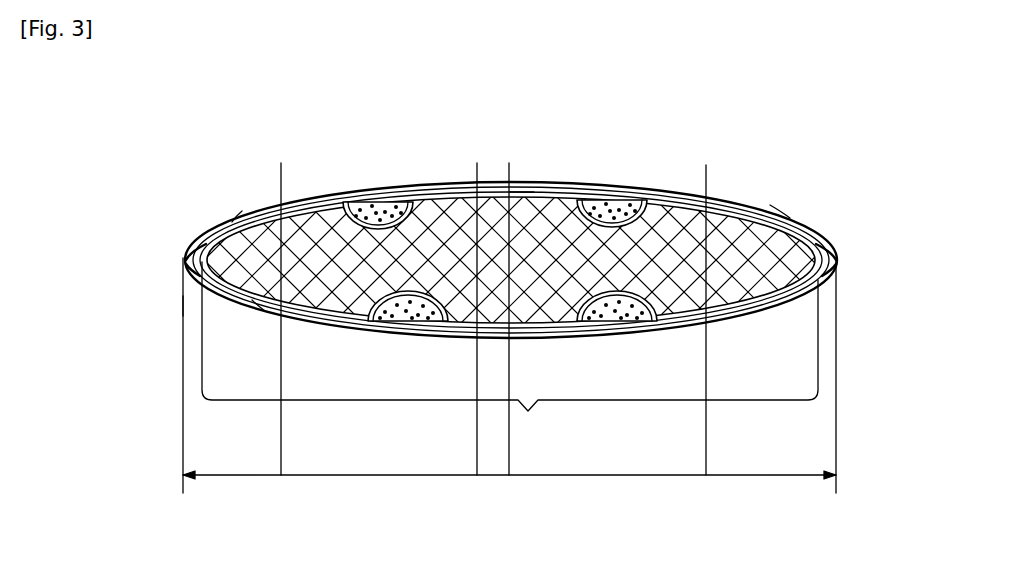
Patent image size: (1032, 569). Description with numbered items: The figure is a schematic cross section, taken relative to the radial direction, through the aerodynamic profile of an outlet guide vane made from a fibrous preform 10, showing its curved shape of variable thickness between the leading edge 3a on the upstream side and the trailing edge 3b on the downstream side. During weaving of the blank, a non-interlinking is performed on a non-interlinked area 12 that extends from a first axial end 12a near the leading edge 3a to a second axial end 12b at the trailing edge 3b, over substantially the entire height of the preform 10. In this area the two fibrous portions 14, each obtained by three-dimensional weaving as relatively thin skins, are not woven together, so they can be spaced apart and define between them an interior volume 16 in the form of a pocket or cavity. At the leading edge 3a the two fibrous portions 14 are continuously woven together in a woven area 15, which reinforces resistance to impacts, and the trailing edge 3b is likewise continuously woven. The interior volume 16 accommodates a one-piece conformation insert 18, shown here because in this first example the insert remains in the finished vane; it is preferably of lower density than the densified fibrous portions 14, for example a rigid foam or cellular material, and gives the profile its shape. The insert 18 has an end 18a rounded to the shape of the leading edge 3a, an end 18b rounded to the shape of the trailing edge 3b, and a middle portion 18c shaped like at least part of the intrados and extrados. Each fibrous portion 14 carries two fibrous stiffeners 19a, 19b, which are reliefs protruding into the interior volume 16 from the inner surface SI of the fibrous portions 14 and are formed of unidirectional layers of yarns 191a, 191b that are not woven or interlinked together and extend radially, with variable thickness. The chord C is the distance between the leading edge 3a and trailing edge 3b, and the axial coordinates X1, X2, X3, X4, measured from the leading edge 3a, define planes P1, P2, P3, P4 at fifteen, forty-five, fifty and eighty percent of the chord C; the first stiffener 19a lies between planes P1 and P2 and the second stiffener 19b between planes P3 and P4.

The fibrous preform 10 is at (143, 163).
The non-interlinked area 12 is at (510, 353).
The first axial end 12a is at (205, 232).
The second axial end 12b is at (838, 255).
The fibrous portions 14 is at (670, 186).
The woven area 15 is at (183, 313).
The interior volume 16 is at (511, 260).
The conformation insert 18 is at (301, 190).
The end of the conformation insert 18a is at (238, 217).
The end of the conformation insert 18b is at (777, 205).
The middle portion 18c is at (522, 180).
The first fibrous stiffener 19a is at (413, 339).
The second fibrous stiffener 19b is at (605, 339).
The unidirectional layers of yarns 191a is at (371, 192).
The unidirectional layers of yarns 191b is at (599, 190).
The leading edge 3a is at (183, 258).
The trailing edge 3b is at (838, 262).
The inner surface SI is at (258, 308).
The chord C is at (228, 478).
The plane P1 is at (281, 308).
The plane P2 is at (475, 308).
The plane P3 is at (507, 308).
The plane P4 is at (703, 308).
The coordinate X1 is at (239, 496).
The coordinate X2 is at (384, 496).
The coordinate X3 is at (600, 496).
The coordinate X4 is at (764, 496).